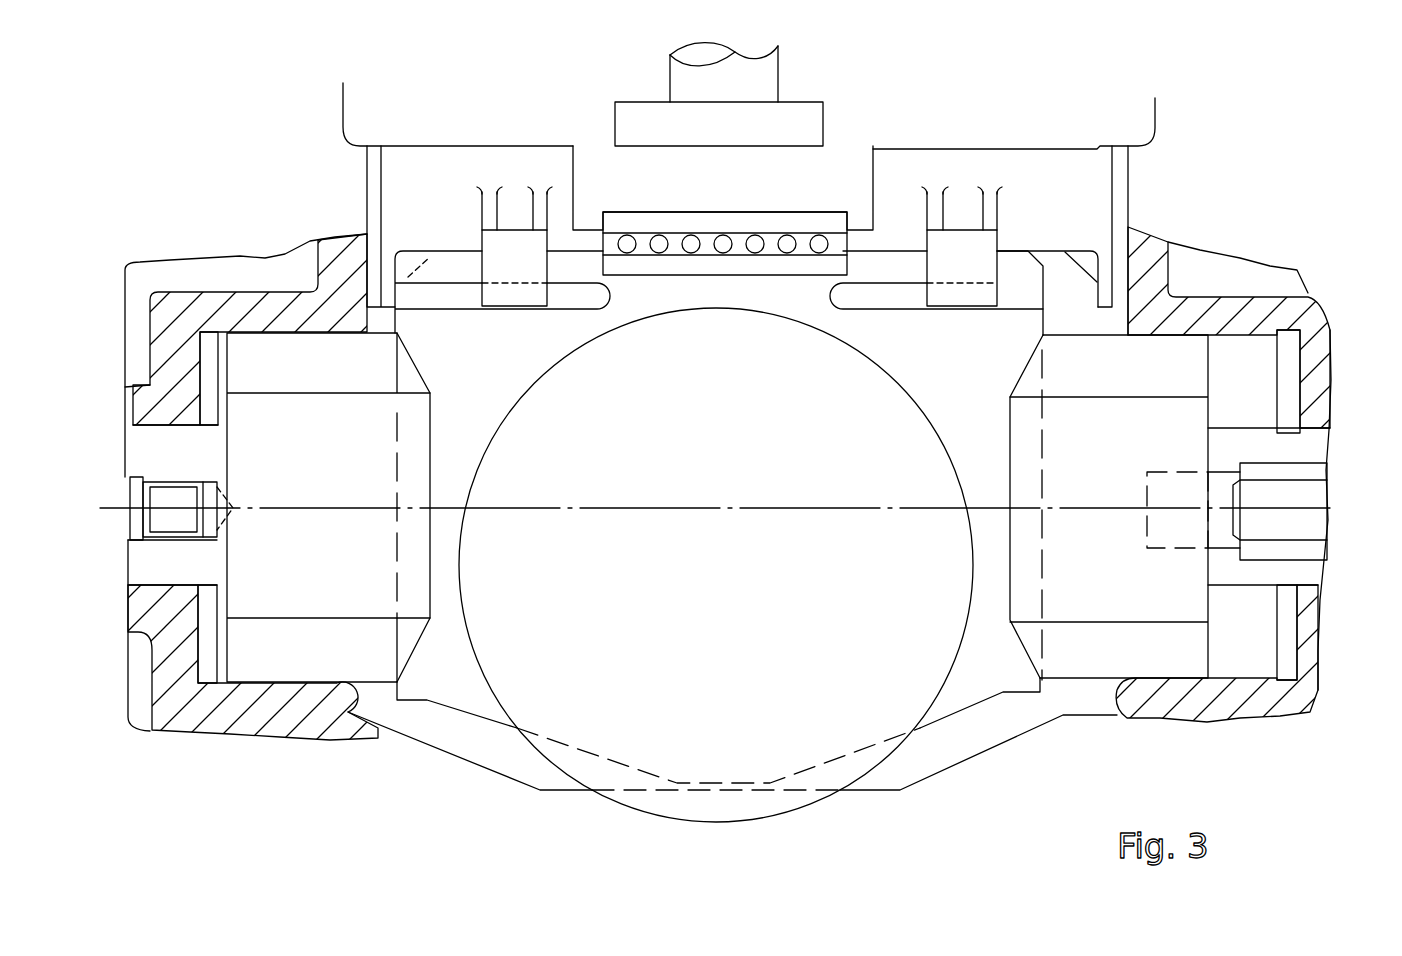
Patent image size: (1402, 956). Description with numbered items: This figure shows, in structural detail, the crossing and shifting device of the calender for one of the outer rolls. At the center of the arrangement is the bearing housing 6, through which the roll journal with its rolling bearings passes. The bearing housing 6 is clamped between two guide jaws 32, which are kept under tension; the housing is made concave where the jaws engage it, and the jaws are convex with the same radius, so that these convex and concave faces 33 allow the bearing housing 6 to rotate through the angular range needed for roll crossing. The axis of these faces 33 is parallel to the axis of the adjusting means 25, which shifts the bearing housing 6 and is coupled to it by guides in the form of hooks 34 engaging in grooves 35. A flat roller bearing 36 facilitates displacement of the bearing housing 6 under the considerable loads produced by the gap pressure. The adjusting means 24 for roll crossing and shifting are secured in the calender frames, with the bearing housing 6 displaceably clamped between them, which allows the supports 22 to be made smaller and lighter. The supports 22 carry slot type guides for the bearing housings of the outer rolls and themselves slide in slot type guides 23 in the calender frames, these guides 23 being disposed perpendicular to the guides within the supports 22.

The bearing housing 6 is at (452, 648).
The support 22 is at (1050, 193).
The slot type guide 23 is at (1130, 197).
The adjusting means 24 is at (135, 520).
The adjusting means 25 is at (740, 80).
The guide jaw 32 is at (267, 582).
The convex and concave faces 33 is at (415, 577).
The hook 34 is at (497, 297).
The groove 35 is at (443, 293).
The flat roller bearing 36 is at (790, 237).